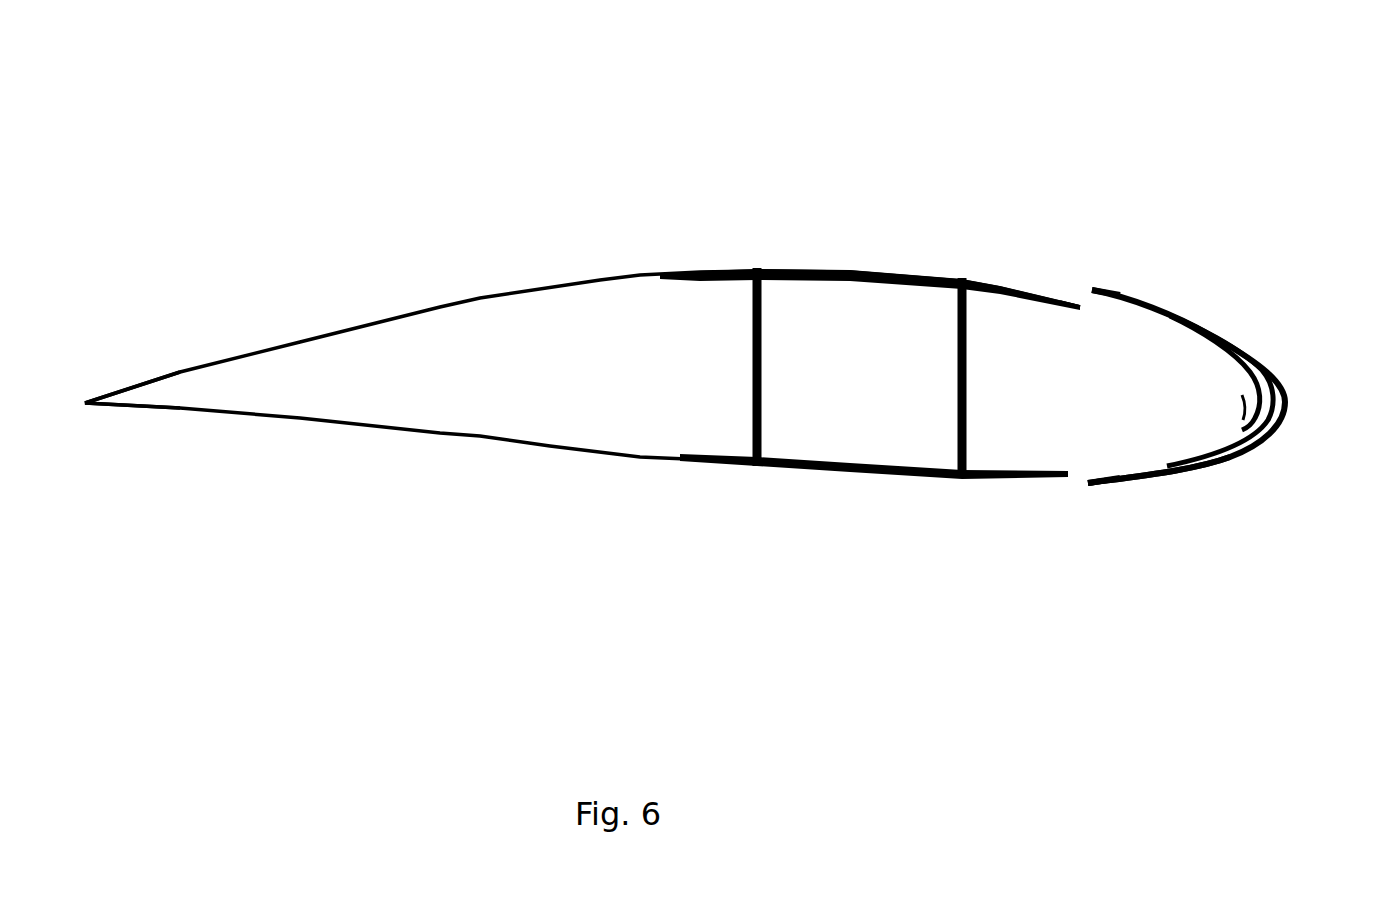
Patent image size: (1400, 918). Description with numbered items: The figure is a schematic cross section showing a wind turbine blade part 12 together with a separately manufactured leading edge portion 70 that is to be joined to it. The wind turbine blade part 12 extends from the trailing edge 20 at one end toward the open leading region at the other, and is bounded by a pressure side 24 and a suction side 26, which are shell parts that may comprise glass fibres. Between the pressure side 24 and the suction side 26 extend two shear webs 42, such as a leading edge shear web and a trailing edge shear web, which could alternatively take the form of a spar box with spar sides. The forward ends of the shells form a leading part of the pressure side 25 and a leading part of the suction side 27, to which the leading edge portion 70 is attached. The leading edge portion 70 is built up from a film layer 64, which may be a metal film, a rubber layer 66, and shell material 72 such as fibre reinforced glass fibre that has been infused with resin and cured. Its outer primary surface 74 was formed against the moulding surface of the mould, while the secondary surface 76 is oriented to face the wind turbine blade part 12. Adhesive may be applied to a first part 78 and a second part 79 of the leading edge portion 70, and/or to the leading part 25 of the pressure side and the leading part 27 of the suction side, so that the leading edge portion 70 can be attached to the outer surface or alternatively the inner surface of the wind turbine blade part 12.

The wind turbine blade part 12 is at (500, 92).
The trailing edge 20 is at (85, 403).
The pressure side 24 is at (977, 483).
The leading part of the pressure side 25 is at (1055, 498).
The suction side 26 is at (1000, 280).
The leading part of the suction side 27 is at (1082, 285).
The shear webs 42 is at (757, 432).
The film layer 64 is at (1276, 420).
The rubber layer 66 is at (1272, 422).
The leading edge portion 70 is at (1330, 442).
The shell material 72 is at (1258, 420).
The primary surface 74 is at (1180, 468).
The secondary surface 76 is at (1242, 395).
The first part of the leading edge portion 78 is at (1123, 505).
The second part of the leading edge portion 79 is at (1128, 275).